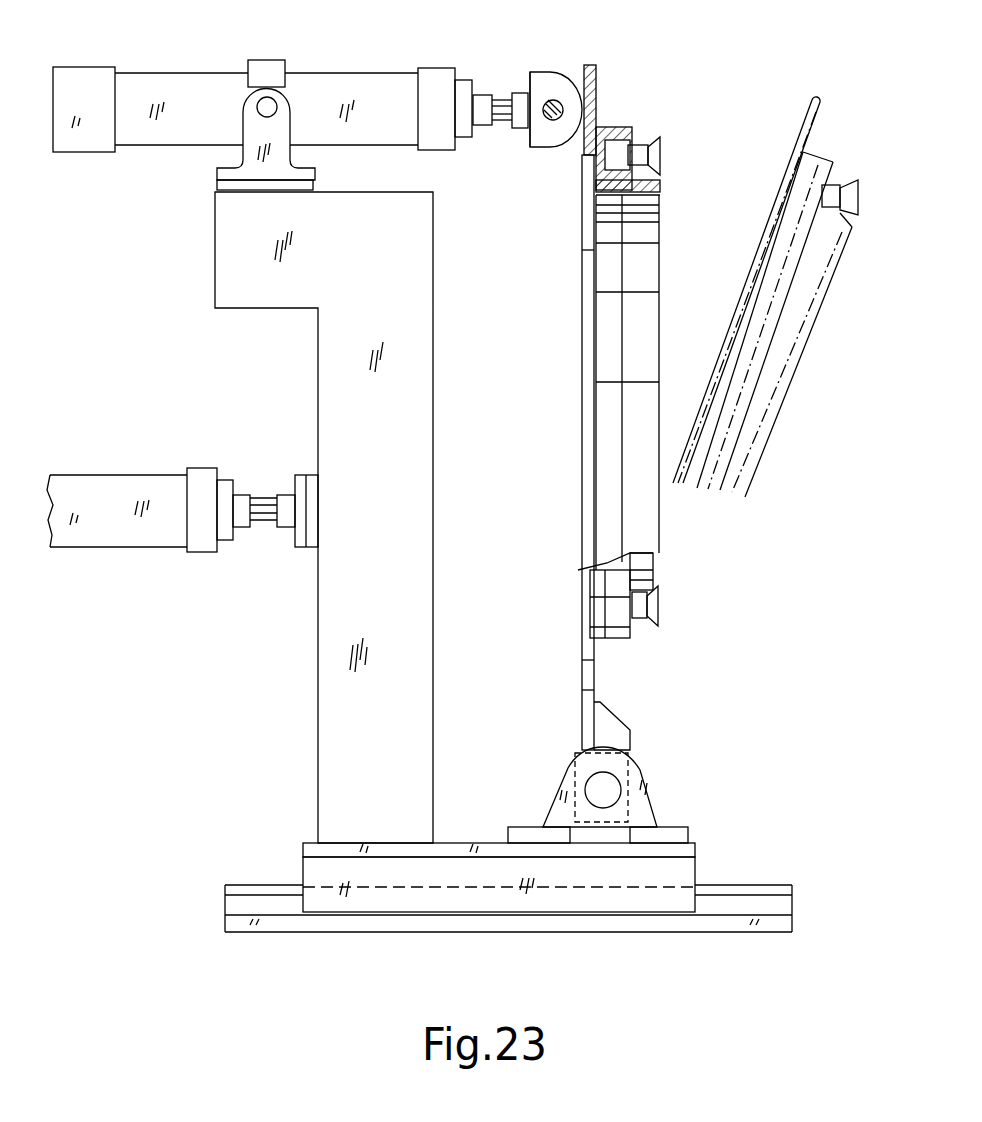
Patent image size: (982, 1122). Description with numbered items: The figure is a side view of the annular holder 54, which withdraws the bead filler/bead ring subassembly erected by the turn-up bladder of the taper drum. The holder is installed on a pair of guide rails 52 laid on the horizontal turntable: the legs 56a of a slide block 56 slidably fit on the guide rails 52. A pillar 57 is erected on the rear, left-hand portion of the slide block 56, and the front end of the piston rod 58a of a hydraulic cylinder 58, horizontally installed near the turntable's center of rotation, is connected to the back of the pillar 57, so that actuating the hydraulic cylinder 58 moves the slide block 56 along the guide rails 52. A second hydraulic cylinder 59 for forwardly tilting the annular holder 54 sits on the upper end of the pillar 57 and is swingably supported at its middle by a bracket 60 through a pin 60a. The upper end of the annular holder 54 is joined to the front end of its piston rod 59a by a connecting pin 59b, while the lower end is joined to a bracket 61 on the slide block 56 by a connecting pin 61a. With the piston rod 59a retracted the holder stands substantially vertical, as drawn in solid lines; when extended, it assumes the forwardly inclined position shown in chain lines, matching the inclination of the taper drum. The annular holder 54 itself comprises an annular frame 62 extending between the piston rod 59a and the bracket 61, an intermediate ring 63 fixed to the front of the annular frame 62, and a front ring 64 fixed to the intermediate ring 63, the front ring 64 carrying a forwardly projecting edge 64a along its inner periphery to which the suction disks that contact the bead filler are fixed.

The guide rails 52 is at (250, 935).
The annular holder 54 is at (634, 110).
The slide block 56 is at (302, 852).
The legs 56a is at (493, 930).
The pillar 57 is at (350, 658).
The hydraulic cylinder 58 is at (95, 537).
The piston rod 58a is at (265, 495).
The hydraulic cylinder 59 is at (358, 80).
The piston rod 59a is at (502, 95).
The connecting pin 59b is at (553, 100).
The bracket 60 is at (258, 140).
The pin 60a is at (262, 102).
The bracket 61 is at (650, 793).
The connecting pin 61a is at (612, 785).
The annular frame 62 is at (582, 607).
The intermediate ring 63 is at (603, 350).
The front ring 64 is at (645, 273).
The projecting edge 64a is at (660, 188).